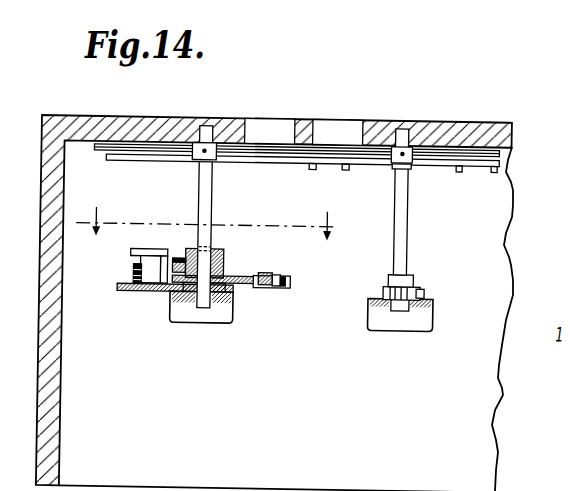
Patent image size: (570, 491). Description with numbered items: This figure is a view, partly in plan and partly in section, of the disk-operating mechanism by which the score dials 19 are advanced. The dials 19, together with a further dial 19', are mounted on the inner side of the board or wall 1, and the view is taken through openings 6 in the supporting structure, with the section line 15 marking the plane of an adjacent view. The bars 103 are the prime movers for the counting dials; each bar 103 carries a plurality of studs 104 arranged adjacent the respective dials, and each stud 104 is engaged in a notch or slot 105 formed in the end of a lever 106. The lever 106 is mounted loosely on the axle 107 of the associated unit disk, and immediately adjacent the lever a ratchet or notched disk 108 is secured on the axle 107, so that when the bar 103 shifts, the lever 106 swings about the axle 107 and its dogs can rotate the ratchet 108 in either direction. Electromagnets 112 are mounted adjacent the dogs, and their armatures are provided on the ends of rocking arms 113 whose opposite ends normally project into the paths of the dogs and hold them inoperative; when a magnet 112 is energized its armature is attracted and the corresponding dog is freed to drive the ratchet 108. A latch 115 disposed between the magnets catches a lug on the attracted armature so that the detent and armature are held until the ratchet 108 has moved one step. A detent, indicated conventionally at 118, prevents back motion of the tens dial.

The board or wall 1 is at (42, 124).
The opening in top plate 6 is at (254, 120).
The section line 15- 15 is at (207, 235).
The dials 19 is at (297, 171).
The lower guide bar 19' is at (303, 177).
The bars 103 is at (291, 271).
The studs 104 is at (276, 269).
The notch or slot 105 is at (292, 281).
The lever 106 is at (240, 275).
The axle 107 is at (200, 184).
The ratchet or notched disk 108 is at (218, 255).
The electromagnets 112 is at (128, 279).
The rocking arms 113 is at (150, 248).
The latch 115 is at (131, 262).
The detent 118 is at (421, 286).